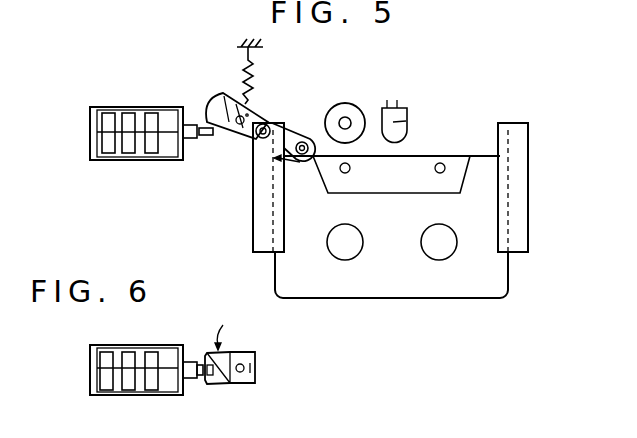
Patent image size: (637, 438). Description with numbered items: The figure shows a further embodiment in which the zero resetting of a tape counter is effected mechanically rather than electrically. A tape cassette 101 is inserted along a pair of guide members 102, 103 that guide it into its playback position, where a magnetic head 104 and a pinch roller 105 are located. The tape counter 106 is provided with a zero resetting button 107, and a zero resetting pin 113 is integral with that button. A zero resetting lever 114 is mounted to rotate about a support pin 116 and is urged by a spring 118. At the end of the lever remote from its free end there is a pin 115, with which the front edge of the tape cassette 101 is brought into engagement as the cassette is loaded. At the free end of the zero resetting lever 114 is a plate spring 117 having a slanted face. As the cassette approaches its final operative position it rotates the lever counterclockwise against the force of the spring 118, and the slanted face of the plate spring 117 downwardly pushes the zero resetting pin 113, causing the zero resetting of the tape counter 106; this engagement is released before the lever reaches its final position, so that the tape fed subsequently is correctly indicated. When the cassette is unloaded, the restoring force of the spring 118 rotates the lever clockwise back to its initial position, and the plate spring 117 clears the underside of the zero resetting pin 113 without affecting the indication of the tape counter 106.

In FIG. 5, the tape cassette 101 is at (413, 287).
In FIG. 5, the guide member 102 is at (262, 252).
In FIG. 5, the guide member 103 is at (542, 192).
In FIG. 5, the magnetic head 104 is at (407, 120).
In FIG. 5, the pinch roller 105 is at (335, 107).
In FIG. 5, the tape counter 106 is at (90, 128).
In FIG. 6, the tape counter 106 is at (90, 372).
In FIG. 5, the zero resetting button 107 is at (195, 138).
In FIG. 6, the zero resetting button 107 is at (185, 360).
In FIG. 5, the zero resetting pin 113 is at (210, 135).
In FIG. 6, the zero resetting pin 113 is at (202, 382).
In FIG. 5, the zero resetting lever 114 is at (295, 143).
In FIG. 5, the pin 115 is at (302, 162).
In FIG. 5, the support pin 116 is at (259, 124).
In FIG. 5, the plate spring 117 is at (215, 110).
In FIG. 6, the plate spring 117 is at (217, 383).
In FIG. 5, the spring 118 is at (245, 66).